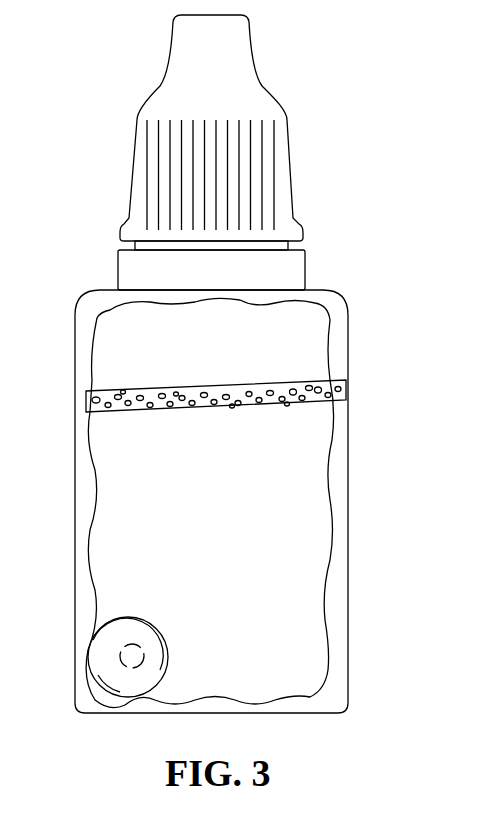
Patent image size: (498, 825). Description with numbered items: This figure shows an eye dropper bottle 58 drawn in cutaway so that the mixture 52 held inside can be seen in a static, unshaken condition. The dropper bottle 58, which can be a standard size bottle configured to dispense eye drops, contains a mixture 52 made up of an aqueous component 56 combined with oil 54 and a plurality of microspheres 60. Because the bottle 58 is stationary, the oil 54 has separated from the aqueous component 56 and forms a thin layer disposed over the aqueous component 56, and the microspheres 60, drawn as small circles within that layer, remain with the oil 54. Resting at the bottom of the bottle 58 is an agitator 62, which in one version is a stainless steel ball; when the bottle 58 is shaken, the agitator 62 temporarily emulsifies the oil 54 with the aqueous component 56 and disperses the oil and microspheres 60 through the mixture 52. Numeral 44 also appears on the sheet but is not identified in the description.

The dropper bottle 58 is at (357, 133).
The mixture 52 is at (332, 474).
The oil 54 is at (303, 398).
The aqueous component 56 is at (298, 572).
The microspheres 60 is at (318, 390).
The agitator 62 is at (110, 660).
The reference numeral 44 is at (472, 824).